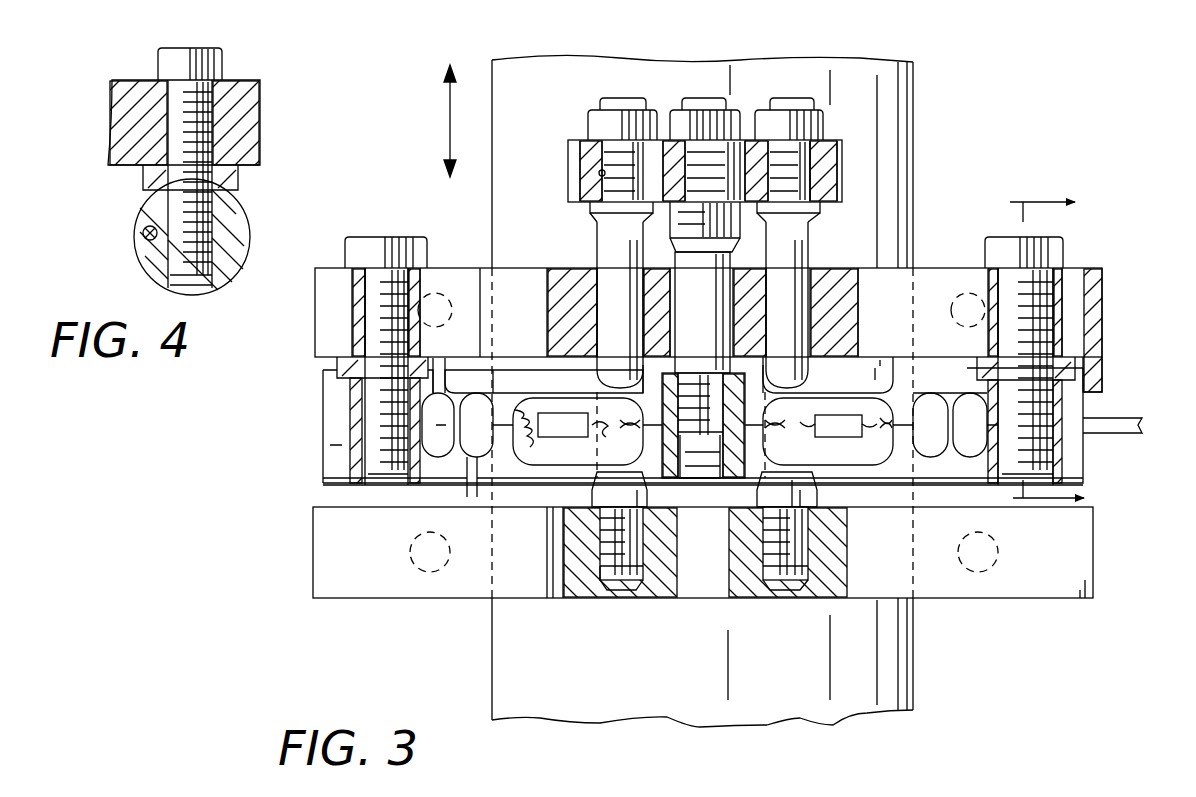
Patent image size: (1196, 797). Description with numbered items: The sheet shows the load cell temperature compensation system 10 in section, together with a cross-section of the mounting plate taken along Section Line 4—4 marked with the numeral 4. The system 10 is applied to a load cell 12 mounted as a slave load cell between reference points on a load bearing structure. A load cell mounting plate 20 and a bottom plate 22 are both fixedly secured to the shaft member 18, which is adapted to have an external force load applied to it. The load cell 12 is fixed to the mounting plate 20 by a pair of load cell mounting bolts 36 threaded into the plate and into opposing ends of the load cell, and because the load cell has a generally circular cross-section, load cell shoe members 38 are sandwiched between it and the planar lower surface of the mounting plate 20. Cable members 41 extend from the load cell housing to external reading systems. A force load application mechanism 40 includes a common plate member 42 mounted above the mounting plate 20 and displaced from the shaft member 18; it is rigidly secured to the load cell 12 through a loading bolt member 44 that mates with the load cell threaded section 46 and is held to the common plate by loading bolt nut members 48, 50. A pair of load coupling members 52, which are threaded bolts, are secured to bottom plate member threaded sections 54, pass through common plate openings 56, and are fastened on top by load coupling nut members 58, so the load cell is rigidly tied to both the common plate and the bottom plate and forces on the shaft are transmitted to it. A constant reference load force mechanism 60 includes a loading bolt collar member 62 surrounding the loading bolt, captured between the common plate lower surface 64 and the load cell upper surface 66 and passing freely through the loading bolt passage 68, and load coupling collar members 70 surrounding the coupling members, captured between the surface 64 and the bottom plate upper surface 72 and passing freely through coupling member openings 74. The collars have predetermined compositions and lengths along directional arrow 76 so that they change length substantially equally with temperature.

In FIG. 3, the load cell temperature compensation system 10 is at (980, 148).
In FIG. 4, the load cell 12 is at (245, 236).
In FIG. 3, the load cell 12 is at (323, 455).
In FIG. 3, the shaft member 18 is at (913, 82).
In FIG. 4, the load cell mounting plate 20 is at (264, 113).
In FIG. 3, the load cell mounting plate 20 is at (313, 332).
In FIG. 3, the bottom plate 22 is at (313, 560).
In FIG. 4, the load cell mounting bolts 36 is at (222, 62).
In FIG. 3, the load cell mounting bolts 36 is at (416, 250).
In FIG. 4, the load cell shoe members 38 is at (238, 180).
In FIG. 3, the load cell shoe members 38 is at (337, 368).
In FIG. 3, the force load application mechanism 40 is at (564, 195).
In FIG. 4, the cable members 41 is at (144, 237).
In FIG. 3, the cable members 41 is at (1107, 433).
In FIG. 3, the common plate member 42 is at (576, 156).
In FIG. 3, the loading bolt member 44 is at (702, 98).
In FIG. 3, the load cell threaded section 46 is at (690, 468).
In FIG. 3, the loading bolt nut member 48 is at (727, 132).
In FIG. 3, the loading bolt nut member 50 is at (697, 282).
In FIG. 3, the load coupling members 52 is at (618, 100).
In FIG. 3, the bottom plate member threaded sections 54 is at (597, 553).
In FIG. 3, the common plate openings 56 is at (599, 173).
In FIG. 3, the load coupling nut members 58 is at (598, 124).
In FIG. 3, the constant reference load force mechanism 60 is at (594, 262).
In FIG. 3, the loading bolt collar member 62 is at (708, 326).
In FIG. 3, the common plate lower surface 64 is at (590, 212).
In FIG. 3, the load cell upper surface 66 is at (757, 366).
In FIG. 3, the loading bolt passage 68 is at (737, 312).
In FIG. 3, the load coupling collar members 70 is at (660, 370).
In FIG. 3, the bottom plate upper surface 72 is at (325, 500).
In FIG. 3, the coupling member openings 74 is at (600, 296).
In FIG. 3, the directional arrow 76 is at (445, 133).
In FIG. 3, the Section Line 4— 4 is at (1065, 349).